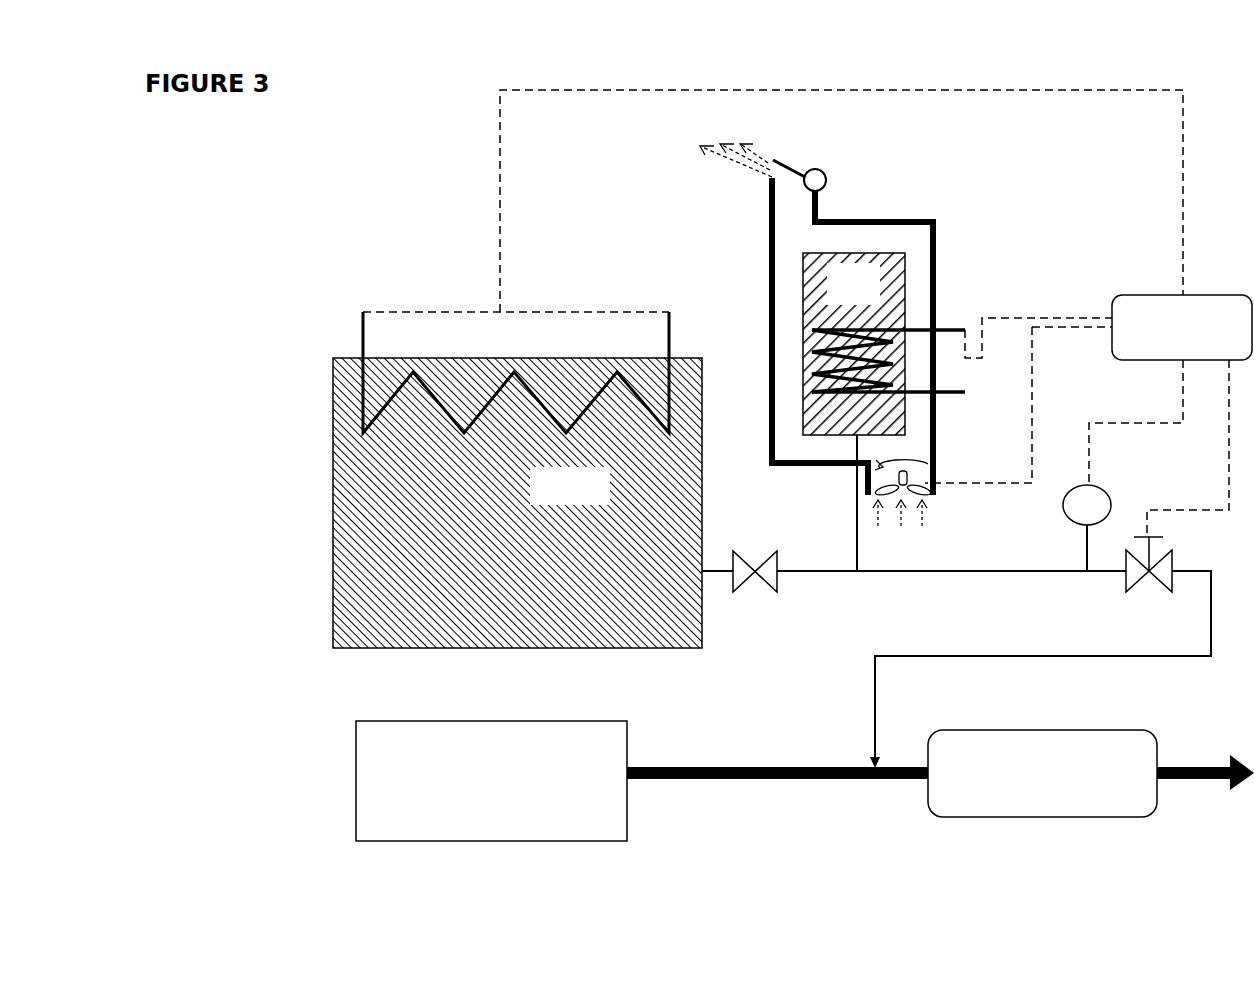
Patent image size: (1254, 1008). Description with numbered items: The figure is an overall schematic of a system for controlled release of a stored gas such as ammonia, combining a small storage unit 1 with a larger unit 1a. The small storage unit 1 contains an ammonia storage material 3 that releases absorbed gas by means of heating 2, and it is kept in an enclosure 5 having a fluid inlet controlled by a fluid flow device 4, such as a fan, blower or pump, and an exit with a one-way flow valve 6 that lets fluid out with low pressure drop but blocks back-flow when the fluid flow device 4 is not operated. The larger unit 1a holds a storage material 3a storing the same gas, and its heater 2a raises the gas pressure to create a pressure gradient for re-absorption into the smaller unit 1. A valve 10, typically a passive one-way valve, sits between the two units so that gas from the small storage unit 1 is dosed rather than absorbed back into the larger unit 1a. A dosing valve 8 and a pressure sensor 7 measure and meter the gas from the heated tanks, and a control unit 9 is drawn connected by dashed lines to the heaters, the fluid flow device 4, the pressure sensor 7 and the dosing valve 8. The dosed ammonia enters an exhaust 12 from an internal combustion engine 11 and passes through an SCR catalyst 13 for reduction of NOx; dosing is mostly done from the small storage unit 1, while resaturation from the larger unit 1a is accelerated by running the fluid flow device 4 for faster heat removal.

The small storage unit 1 is at (915, 263).
The larger unit 1a is at (558, 348).
The heating 2 is at (978, 381).
The heater 2a is at (354, 316).
The ammonia storage material 3 is at (853, 284).
The storage material 3a is at (570, 486).
The fluid flow device 4 is at (922, 476).
The enclosure 5 is at (945, 219).
The one-way flow valve 6 is at (822, 158).
The pressure sensor 7 is at (1123, 465).
The dosing valve 8 is at (1177, 488).
The controller 9 is at (1182, 327).
The valve 10 is at (759, 583).
The internal combustion engine 11 is at (491, 781).
The exhaust 12 is at (940, 766).
The SCR catalyst 13 is at (1042, 773).